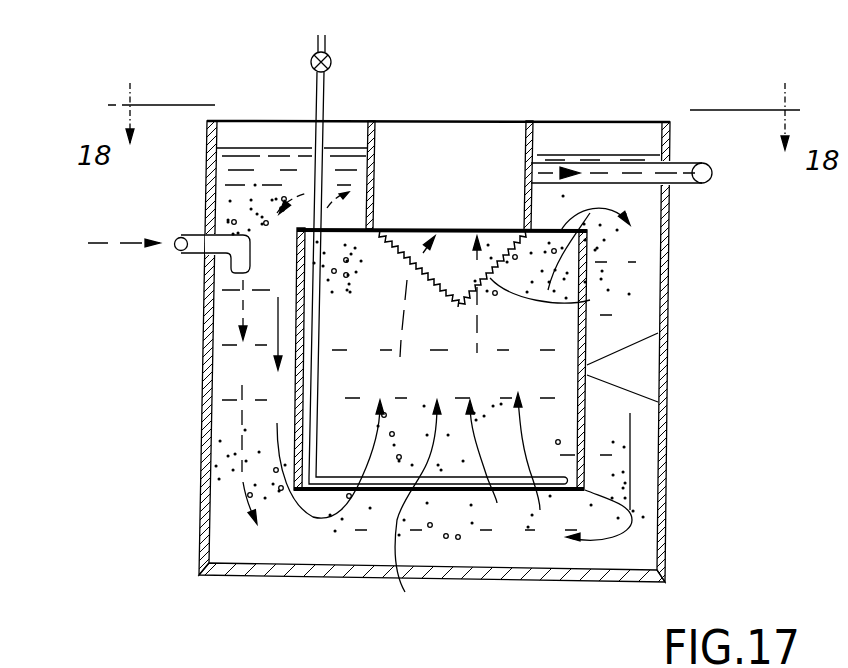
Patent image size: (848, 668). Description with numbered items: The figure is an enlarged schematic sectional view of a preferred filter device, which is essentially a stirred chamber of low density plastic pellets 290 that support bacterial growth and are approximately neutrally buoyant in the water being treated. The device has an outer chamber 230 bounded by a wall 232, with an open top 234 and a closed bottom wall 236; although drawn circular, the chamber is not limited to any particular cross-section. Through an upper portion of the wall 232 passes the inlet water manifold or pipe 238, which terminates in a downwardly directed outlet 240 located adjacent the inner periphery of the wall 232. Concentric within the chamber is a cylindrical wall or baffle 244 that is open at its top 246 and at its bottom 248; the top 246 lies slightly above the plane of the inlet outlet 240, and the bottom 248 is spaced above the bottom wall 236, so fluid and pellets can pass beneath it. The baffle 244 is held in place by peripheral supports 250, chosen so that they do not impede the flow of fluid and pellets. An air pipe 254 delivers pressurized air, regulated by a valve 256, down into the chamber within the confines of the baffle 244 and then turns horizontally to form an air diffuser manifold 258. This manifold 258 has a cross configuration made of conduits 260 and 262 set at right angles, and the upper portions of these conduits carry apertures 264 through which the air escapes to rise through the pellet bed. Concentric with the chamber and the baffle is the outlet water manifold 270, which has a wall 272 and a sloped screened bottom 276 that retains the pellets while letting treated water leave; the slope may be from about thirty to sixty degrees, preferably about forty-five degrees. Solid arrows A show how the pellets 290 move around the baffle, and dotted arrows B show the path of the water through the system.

The outer chamber 230 is at (185, 496).
The wall 232 is at (203, 395).
The open top 234 is at (215, 120).
The closed bottom wall 236 is at (240, 578).
The inlet water manifold or pipe 238 is at (210, 252).
The downwardly directed outlet 240 is at (205, 312).
The cylindrical wall or baffle 244 is at (583, 473).
The top of baffle 246 is at (560, 234).
The bottom of baffle 248 is at (617, 510).
The peripheral supports 250 is at (643, 382).
The air pipe 254 is at (323, 36).
The valve 256 is at (330, 68).
The air diffuser manifold 258 is at (405, 592).
The conduit 260 is at (362, 477).
The conduit 262 is at (453, 478).
The apertures 264 is at (557, 492).
The outlet water manifold 270 is at (529, 122).
The wall 272 is at (375, 135).
The sloped screened bottom 276 is at (590, 300).
The pellets 290 is at (647, 325).
The solid arrows A is at (660, 203).
The dotted arrows B is at (480, 185).